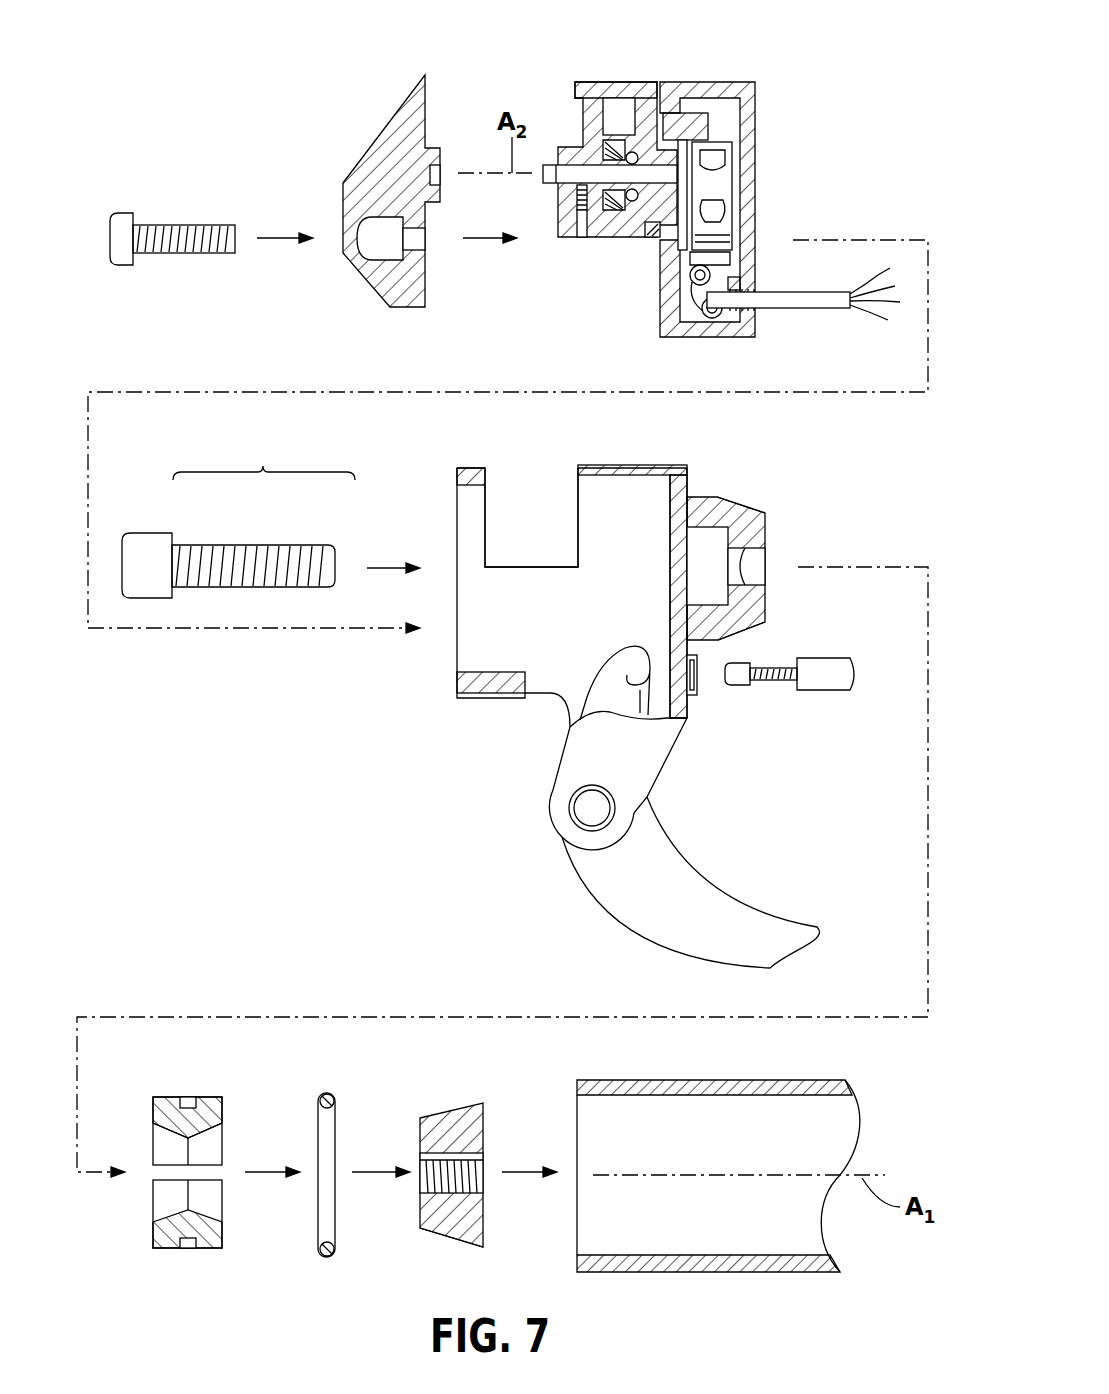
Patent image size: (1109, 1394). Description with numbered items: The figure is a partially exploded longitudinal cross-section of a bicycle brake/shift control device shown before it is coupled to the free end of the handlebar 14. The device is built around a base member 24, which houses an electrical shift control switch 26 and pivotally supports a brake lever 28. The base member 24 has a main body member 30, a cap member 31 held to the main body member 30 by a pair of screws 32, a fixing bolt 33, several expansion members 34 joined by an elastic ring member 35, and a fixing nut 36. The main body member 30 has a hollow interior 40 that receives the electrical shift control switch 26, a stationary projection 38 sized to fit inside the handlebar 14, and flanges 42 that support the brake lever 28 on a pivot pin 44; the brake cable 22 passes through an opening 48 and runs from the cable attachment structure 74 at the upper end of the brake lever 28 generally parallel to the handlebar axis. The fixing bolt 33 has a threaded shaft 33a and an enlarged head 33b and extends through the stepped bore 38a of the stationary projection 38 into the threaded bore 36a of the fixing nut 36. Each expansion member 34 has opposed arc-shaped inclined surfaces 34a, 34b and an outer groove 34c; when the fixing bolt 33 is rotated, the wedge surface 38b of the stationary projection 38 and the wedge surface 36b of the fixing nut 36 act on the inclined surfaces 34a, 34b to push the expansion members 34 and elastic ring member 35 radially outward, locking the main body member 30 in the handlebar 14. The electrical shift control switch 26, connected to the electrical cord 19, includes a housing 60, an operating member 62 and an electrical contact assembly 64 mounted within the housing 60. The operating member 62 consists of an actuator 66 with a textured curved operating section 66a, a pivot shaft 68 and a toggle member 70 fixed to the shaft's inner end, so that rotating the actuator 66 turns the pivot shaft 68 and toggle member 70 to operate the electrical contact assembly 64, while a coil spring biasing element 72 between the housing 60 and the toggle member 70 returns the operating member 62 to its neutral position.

The handlebar 14 is at (800, 1078).
The electrical cord 19 is at (817, 310).
The brake cable 22 is at (815, 660).
The base member 24 is at (624, 452).
The electrical shift control switch 26 is at (742, 66).
The brake lever 28 is at (712, 878).
The main body member 30 is at (455, 650).
The cap member 31 is at (388, 123).
The screws 32 is at (178, 225).
The fixing bolt 33 is at (238, 515).
The threaded shaft 33a is at (260, 545).
The enlarged head 33b is at (155, 533).
The expansion members 34 is at (222, 1155).
The arc-shaped inclined surface 34a is at (153, 1140).
The arc-shaped inclined surface 34b is at (222, 1140).
The outer groove 34c is at (188, 1097).
The elastic ring member 35 is at (327, 1093).
The fixing nut 36 is at (458, 1105).
The threaded bore 36a is at (420, 1178).
The wedge surface 36b is at (440, 1237).
The stationary projection 38 is at (730, 497).
The stepped bore 38a is at (765, 563).
The wedge surface 38b is at (747, 510).
The hollow interior 40 is at (595, 503).
The flanges 42 is at (617, 742).
The pivot pin 44 is at (587, 805).
The opening 48 is at (697, 683).
The housing 60 is at (755, 125).
The operating member 62 is at (628, 70).
The electrical contact assembly 64 is at (715, 190).
The actuator 66 is at (587, 122).
The curved operating section 66a is at (595, 80).
The pivot shaft 68 is at (555, 177).
The toggle member 70 is at (692, 110).
The biasing element 72 is at (658, 232).
The cable attachment structure 74 is at (622, 652).